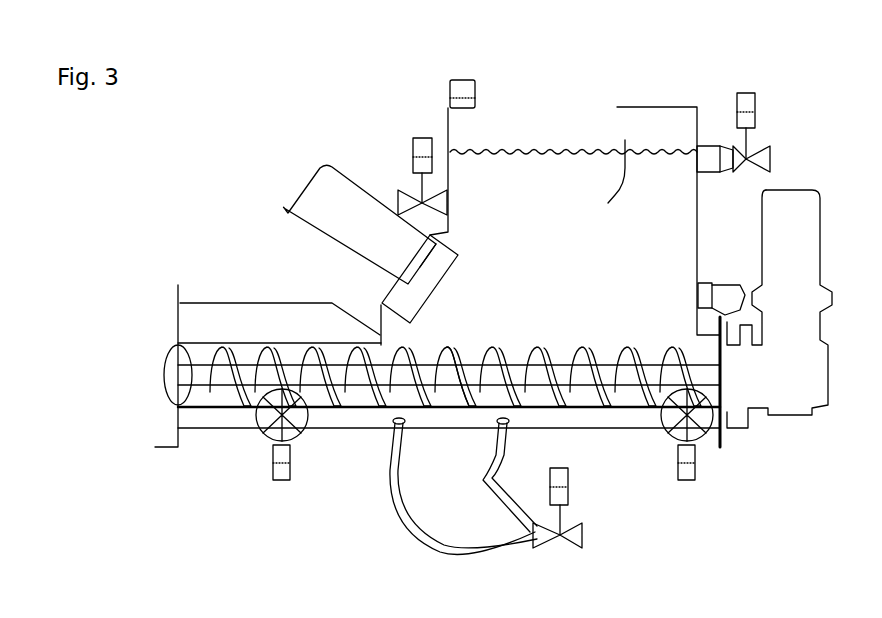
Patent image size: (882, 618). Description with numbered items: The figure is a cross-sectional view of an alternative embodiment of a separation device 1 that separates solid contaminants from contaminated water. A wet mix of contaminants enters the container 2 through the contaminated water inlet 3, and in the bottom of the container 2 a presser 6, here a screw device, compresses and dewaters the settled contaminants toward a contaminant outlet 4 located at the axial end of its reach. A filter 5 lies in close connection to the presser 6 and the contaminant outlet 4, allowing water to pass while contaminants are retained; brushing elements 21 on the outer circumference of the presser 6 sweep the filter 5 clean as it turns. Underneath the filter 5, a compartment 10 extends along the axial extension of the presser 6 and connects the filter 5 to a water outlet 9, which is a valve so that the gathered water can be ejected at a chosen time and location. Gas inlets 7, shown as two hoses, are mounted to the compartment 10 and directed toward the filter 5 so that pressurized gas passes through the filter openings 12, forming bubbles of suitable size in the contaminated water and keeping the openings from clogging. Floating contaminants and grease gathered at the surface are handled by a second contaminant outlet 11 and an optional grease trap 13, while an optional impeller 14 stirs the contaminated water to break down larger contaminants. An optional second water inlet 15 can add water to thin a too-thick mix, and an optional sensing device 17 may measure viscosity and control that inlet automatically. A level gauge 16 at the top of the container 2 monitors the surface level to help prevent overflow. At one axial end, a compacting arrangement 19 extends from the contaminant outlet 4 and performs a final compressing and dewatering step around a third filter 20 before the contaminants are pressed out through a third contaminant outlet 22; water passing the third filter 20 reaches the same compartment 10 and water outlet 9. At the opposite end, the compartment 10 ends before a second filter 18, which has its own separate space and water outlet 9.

The separation device 1 is at (768, 42).
The container 2 is at (447, 157).
The contaminated water inlet 3 is at (565, 85).
The contaminant outlet 4 is at (385, 410).
The filter 5 is at (408, 428).
The presser 6 is at (600, 348).
The gas inlets 7 is at (482, 440).
The water outlet 9 is at (293, 440).
The compartment 10 is at (570, 418).
The second contaminant outlet 11 is at (770, 158).
The filter openings 12 is at (470, 350).
The grease trap 13 is at (650, 135).
The impeller 14 is at (443, 285).
The second water inlet 15 is at (398, 213).
The level gauge 16 is at (450, 88).
The sensing device 17 is at (716, 280).
The second filter 18 is at (630, 410).
The compacting arrangement 19 is at (216, 292).
The third filter 20 is at (205, 395).
The brushing elements 21 is at (505, 347).
The third contaminant outlet 22 is at (165, 372).